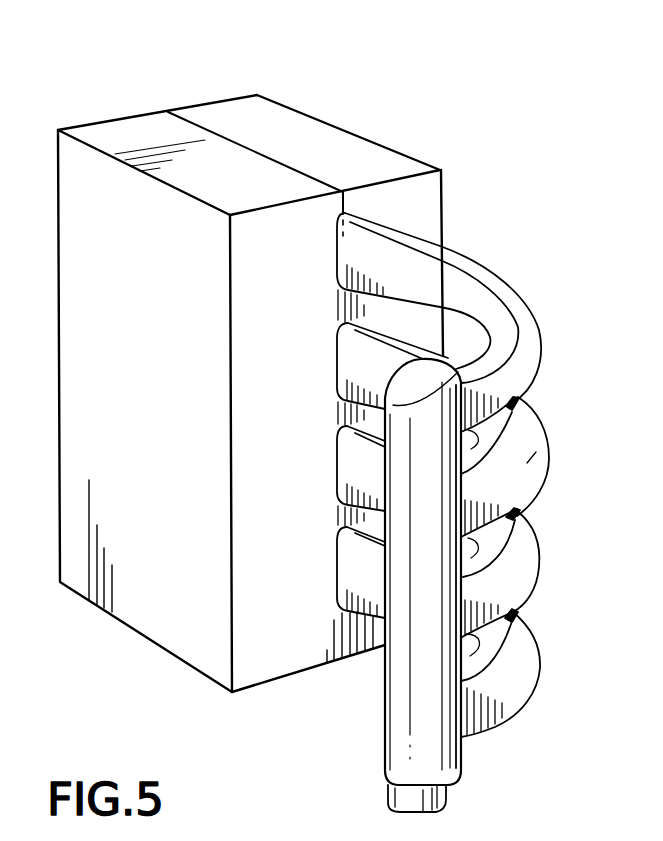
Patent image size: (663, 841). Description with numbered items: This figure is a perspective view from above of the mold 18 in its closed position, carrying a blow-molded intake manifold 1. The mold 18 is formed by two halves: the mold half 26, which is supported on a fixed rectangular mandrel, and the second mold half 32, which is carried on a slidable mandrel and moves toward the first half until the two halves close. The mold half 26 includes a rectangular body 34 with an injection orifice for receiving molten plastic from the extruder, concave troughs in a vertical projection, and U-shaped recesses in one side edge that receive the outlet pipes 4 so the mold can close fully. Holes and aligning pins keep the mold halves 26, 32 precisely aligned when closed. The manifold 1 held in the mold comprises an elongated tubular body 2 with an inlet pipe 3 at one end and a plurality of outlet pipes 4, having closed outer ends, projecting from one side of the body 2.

The mold 18 is at (148, 80).
The mold half 26 is at (305, 113).
The rectangular body 34 is at (390, 158).
The second mold half 32 is at (146, 395).
The intake manifold 1 is at (487, 243).
The outlet pipes 4 is at (516, 363).
The tubular body 2 is at (443, 562).
The inlet pipe 3 is at (438, 800).